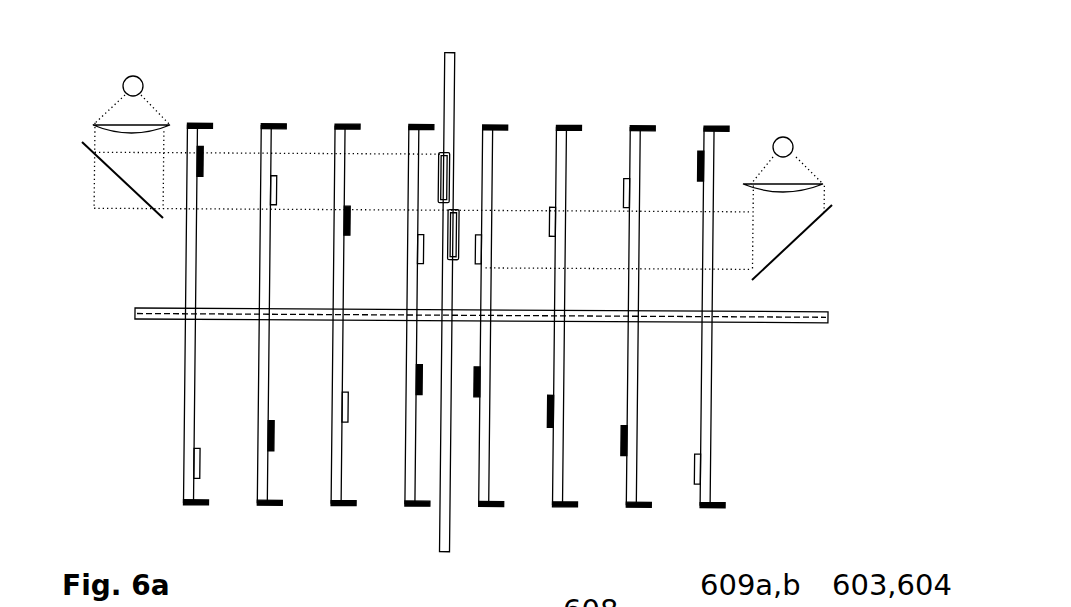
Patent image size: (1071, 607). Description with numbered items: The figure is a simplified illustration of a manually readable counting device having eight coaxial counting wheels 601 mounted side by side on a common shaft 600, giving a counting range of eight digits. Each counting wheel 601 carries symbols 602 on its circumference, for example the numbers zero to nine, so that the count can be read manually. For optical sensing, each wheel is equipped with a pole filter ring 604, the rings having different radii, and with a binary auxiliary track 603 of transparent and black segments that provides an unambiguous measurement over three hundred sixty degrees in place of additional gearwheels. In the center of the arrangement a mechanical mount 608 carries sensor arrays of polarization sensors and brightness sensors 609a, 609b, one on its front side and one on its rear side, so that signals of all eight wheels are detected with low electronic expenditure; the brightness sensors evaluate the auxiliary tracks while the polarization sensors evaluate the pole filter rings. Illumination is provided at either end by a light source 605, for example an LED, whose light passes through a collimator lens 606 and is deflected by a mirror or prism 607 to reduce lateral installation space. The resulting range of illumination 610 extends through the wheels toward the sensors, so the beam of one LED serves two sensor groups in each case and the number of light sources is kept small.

The common shaft 600 is at (170, 315).
The counting wheel 601 is at (333, 273).
The symbols on the circumference of the counting wheel 602 is at (197, 120).
The binary auxiliary track 603 is at (273, 200).
The pole filter ring 604 is at (270, 195).
The light source 605 is at (129, 77).
The collimator lens 606 is at (93, 123).
The mirror or prism 607 is at (130, 188).
The mechanical mount for sensors 608 is at (455, 75).
The array of polarization sensors and brightness sensors 609a is at (452, 160).
The array of polarization sensors and brightness sensors 609b is at (457, 218).
The range of illumination 610 is at (650, 270).